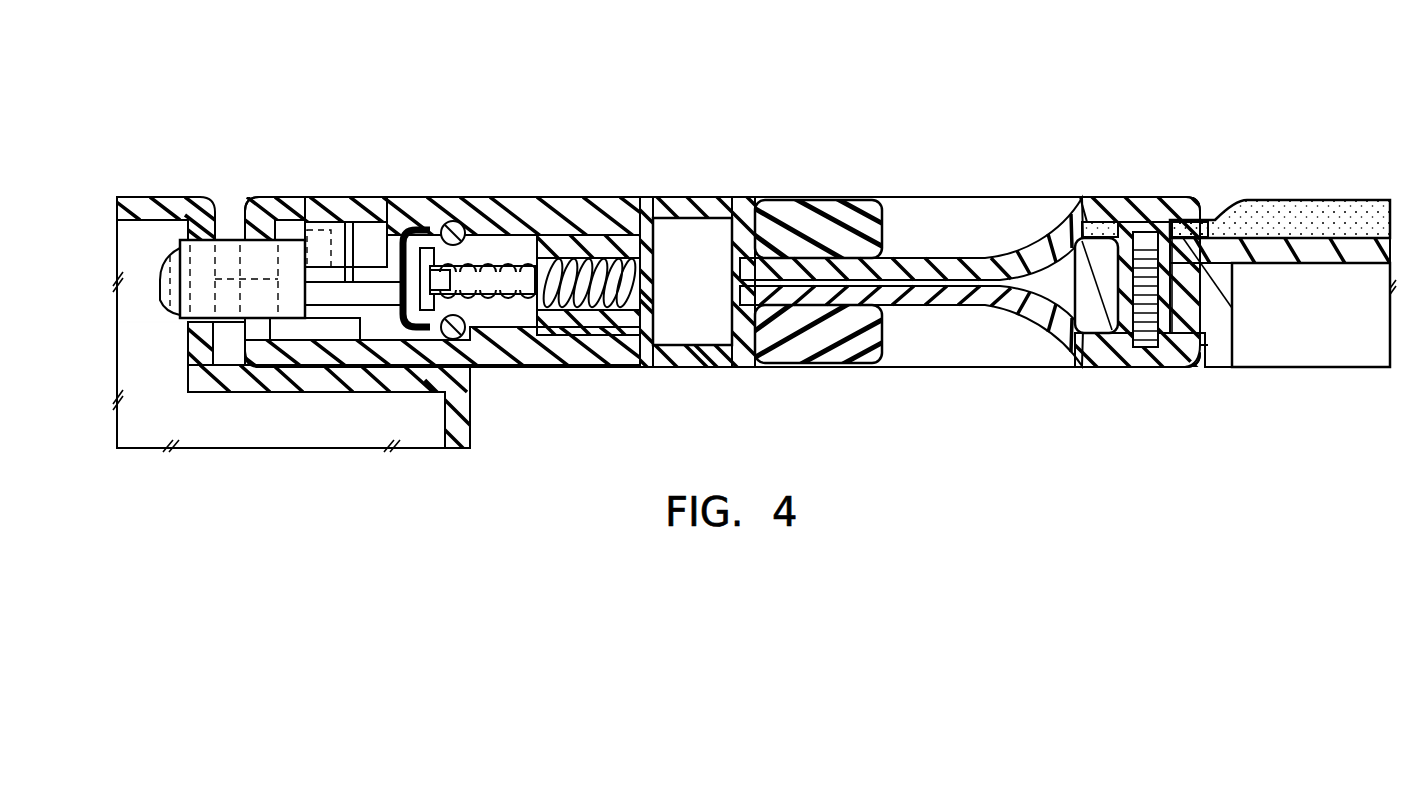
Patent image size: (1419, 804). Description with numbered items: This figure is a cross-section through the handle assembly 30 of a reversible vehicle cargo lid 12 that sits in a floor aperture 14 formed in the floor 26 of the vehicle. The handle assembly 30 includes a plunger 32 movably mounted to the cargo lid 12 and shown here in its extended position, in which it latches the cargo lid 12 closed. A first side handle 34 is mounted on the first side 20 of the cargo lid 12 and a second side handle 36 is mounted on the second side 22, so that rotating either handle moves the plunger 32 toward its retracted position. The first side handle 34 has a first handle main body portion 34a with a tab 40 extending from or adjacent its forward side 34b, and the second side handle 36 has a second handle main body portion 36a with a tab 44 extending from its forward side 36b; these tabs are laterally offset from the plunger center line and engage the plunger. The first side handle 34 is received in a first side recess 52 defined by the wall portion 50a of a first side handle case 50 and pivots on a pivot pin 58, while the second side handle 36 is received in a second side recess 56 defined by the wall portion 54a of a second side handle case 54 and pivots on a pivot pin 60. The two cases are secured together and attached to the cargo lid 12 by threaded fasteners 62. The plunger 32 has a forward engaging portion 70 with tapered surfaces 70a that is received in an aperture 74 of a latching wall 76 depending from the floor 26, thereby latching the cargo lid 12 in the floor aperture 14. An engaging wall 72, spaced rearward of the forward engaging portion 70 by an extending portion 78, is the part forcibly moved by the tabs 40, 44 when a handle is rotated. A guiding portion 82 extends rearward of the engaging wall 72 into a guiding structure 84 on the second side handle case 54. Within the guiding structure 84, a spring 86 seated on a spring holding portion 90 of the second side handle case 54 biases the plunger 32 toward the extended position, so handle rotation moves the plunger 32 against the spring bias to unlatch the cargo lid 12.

The reversible vehicle cargo lid 12 is at (1277, 190).
The floor aperture 14 is at (216, 228).
The first side 20 is at (1311, 200).
The second side 22 is at (1333, 263).
The floor 26 is at (175, 197).
The handle assembly 30 is at (662, 162).
The plunger 32 is at (170, 310).
The first side handle 34 is at (818, 192).
The first handle main body portion 34a is at (600, 213).
The forward side of the first side handle 34b is at (406, 205).
The second side handle 36 is at (818, 372).
The second handle main body portion 36a is at (603, 368).
The forward side of the second side handle 36b is at (407, 365).
The tab 40 is at (404, 262).
The tab 44 is at (375, 300).
The first side handle case 50 is at (1092, 192).
The wall portion 50a is at (903, 262).
The first side recess 52 is at (937, 262).
The second side handle case 54 is at (1086, 375).
The wall portion 54a is at (912, 316).
The second side recess 56 is at (945, 325).
The pivot pin 58 is at (462, 212).
The pivot pin 60 is at (462, 340).
The threaded fasteners 62 is at (1147, 350).
The forward engaging portion 70 is at (253, 248).
The tapered surfaces 70a is at (210, 278).
The engaging wall 72 is at (436, 220).
The aperture 74 is at (200, 318).
The latching wall 76 is at (197, 338).
The extending portion 78 is at (358, 268).
The guiding portion 82 is at (523, 286).
The guiding structure 84 is at (562, 238).
The spring 86 is at (508, 262).
The spring holding portion 90 is at (600, 260).